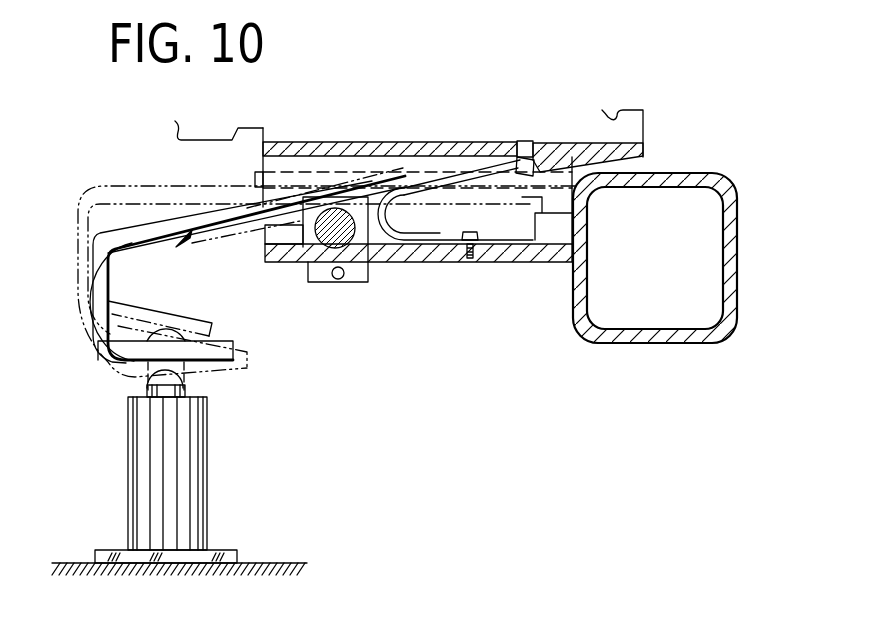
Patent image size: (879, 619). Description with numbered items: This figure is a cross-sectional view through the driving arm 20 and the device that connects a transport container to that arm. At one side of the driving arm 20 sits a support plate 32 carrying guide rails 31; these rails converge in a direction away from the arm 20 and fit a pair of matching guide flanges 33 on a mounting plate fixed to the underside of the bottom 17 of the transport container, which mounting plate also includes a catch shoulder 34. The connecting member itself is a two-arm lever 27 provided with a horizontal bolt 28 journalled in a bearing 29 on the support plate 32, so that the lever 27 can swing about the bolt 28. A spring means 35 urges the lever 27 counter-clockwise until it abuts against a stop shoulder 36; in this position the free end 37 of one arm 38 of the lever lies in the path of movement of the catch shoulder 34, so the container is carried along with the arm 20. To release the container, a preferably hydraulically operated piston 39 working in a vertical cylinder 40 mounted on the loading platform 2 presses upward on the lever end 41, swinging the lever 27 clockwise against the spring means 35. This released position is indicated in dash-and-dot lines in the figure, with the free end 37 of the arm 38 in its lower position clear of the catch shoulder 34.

The loading platform 2 is at (233, 550).
The bottom of the transport container 17 is at (623, 128).
The driving arm 20 is at (660, 337).
The two-arm lever 27 is at (183, 240).
The horizontal bolt 28 is at (327, 242).
The bearing 29 is at (360, 272).
The guide rails 31 is at (275, 160).
The support plate 32 is at (437, 253).
The guide flanges 33 is at (312, 178).
The catch shoulder 34 is at (547, 163).
The spring means 35 is at (450, 196).
The stop shoulder 36 is at (275, 242).
The free end of lever arm 37 is at (527, 152).
The lever arm 38 is at (453, 182).
The piston 39 is at (188, 392).
The vertical cylinder 40 is at (192, 480).
The lever end 41 is at (247, 352).